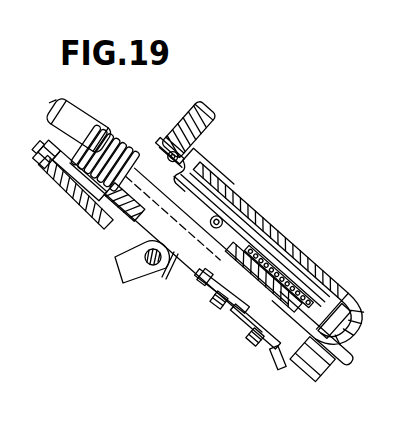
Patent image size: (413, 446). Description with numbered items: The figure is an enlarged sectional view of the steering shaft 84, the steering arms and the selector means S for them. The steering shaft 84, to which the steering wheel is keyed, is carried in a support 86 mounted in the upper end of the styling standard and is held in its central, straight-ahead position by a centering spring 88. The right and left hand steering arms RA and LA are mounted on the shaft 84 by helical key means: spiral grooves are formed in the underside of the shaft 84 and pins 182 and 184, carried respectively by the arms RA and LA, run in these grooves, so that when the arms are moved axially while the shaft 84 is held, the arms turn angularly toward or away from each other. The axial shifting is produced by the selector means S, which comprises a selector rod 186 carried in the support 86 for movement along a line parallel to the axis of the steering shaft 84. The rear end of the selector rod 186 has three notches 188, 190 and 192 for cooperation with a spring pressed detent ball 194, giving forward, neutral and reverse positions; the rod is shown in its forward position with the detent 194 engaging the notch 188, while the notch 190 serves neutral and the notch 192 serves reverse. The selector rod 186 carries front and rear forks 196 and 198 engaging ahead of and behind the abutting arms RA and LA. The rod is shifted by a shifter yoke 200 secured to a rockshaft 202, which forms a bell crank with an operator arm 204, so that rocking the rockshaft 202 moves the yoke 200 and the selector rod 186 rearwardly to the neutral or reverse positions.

The steering shaft 84 is at (72, 113).
The support 86 is at (311, 265).
The centering spring 88 is at (113, 137).
The pin 182 is at (250, 340).
The pin 184 is at (222, 314).
The selector rod 186 is at (340, 339).
The detent notch 188 is at (171, 153).
The detent notch 190 is at (206, 164).
The detent notch 192 is at (219, 179).
The detent ball 194 is at (169, 150).
The front fork 196 is at (314, 300).
The rear fork 198 is at (262, 238).
The shifter yoke 200 is at (177, 264).
The rockshaft 202 is at (145, 254).
The operator arm 204 is at (130, 267).
The selector means S is at (242, 213).
The left hand steering arm LA is at (204, 291).
The right hand steering arm RA is at (263, 353).